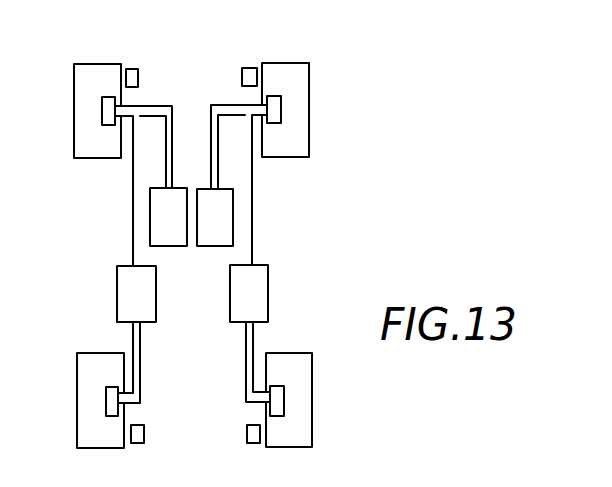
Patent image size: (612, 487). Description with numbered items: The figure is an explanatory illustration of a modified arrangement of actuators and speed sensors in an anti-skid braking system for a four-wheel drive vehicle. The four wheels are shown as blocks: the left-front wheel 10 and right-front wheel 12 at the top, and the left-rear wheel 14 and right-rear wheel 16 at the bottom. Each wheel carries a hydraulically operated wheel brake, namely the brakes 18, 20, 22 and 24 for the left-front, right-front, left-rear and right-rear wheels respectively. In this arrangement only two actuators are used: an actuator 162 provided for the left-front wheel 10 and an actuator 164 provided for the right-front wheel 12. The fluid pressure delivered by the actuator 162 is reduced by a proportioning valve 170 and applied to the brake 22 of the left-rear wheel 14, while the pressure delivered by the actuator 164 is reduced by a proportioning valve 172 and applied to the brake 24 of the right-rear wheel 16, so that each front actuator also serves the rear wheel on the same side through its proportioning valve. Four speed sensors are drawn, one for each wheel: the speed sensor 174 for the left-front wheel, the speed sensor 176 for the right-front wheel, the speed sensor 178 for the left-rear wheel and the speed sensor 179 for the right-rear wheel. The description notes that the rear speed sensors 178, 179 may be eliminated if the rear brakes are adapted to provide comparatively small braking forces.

The left-front wheel 10 is at (85, 137).
The right-front wheel 12 is at (295, 144).
The left-rear wheel 14 is at (98, 367).
The right-rear wheel 16 is at (300, 365).
The wheel brake 18 is at (103, 104).
The wheel brake 20 is at (281, 101).
The wheel brake 22 is at (109, 406).
The wheel brake 24 is at (283, 406).
The actuator 162 is at (156, 213).
The actuator 164 is at (228, 213).
The proportioning valve 170 is at (128, 284).
The proportioning valve 172 is at (258, 282).
The speed sensor 174 is at (134, 70).
The speed sensor 176 is at (250, 72).
The speed sensor 178 is at (141, 434).
The speed sensor 179 is at (247, 434).